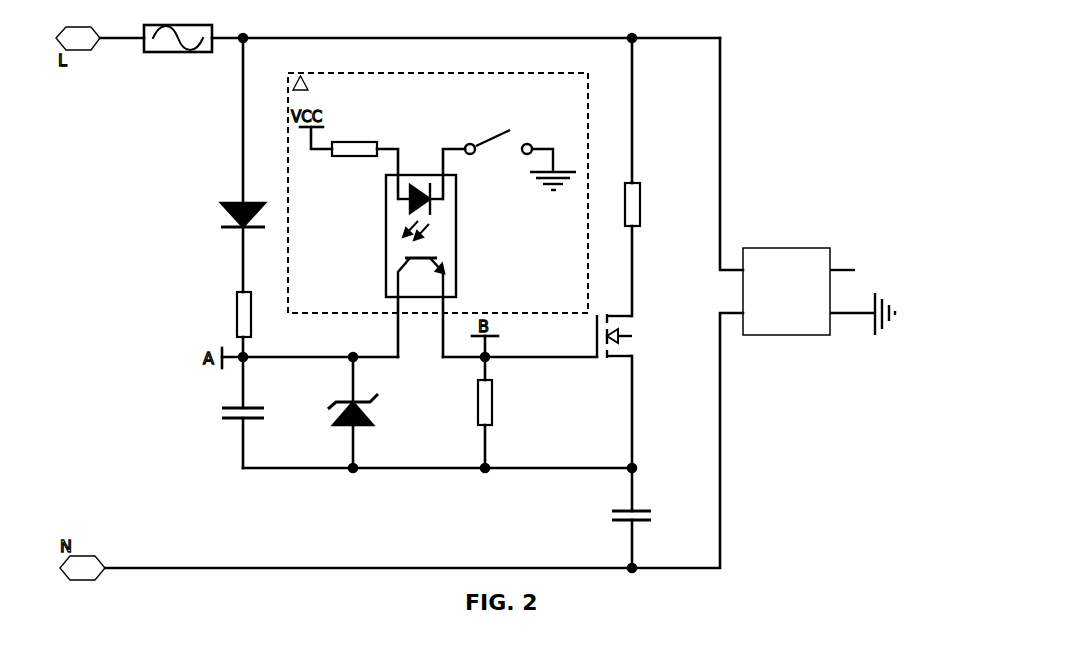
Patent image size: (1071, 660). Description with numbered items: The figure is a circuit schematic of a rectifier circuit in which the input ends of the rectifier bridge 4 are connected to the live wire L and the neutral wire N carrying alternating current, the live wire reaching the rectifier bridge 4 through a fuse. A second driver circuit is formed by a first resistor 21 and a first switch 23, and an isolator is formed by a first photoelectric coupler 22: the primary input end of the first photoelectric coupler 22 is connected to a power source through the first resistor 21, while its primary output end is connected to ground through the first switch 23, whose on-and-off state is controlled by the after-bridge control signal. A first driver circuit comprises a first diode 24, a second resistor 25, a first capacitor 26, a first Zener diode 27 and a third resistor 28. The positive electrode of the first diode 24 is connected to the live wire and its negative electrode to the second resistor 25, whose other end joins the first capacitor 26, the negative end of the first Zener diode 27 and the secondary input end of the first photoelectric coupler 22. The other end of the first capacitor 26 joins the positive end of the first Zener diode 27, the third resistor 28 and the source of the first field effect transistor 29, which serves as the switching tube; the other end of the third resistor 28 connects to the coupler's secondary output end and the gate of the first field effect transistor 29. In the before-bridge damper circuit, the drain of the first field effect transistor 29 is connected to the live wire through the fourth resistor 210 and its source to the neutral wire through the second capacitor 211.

The rectifier bridge 4 is at (768, 255).
The first resistor 21 is at (354, 140).
The first photoelectric coupler 22 is at (433, 236).
The first switch 23 is at (520, 163).
The first diode 24 is at (253, 215).
The second resistor 25 is at (255, 314).
The first capacitor 26 is at (254, 413).
The first Zener diode 27 is at (362, 413).
The third resistor 28 is at (496, 402).
The first field effect transistor 29 is at (628, 336).
The fourth resistor 210 is at (649, 204).
The second capacitor 211 is at (649, 514).